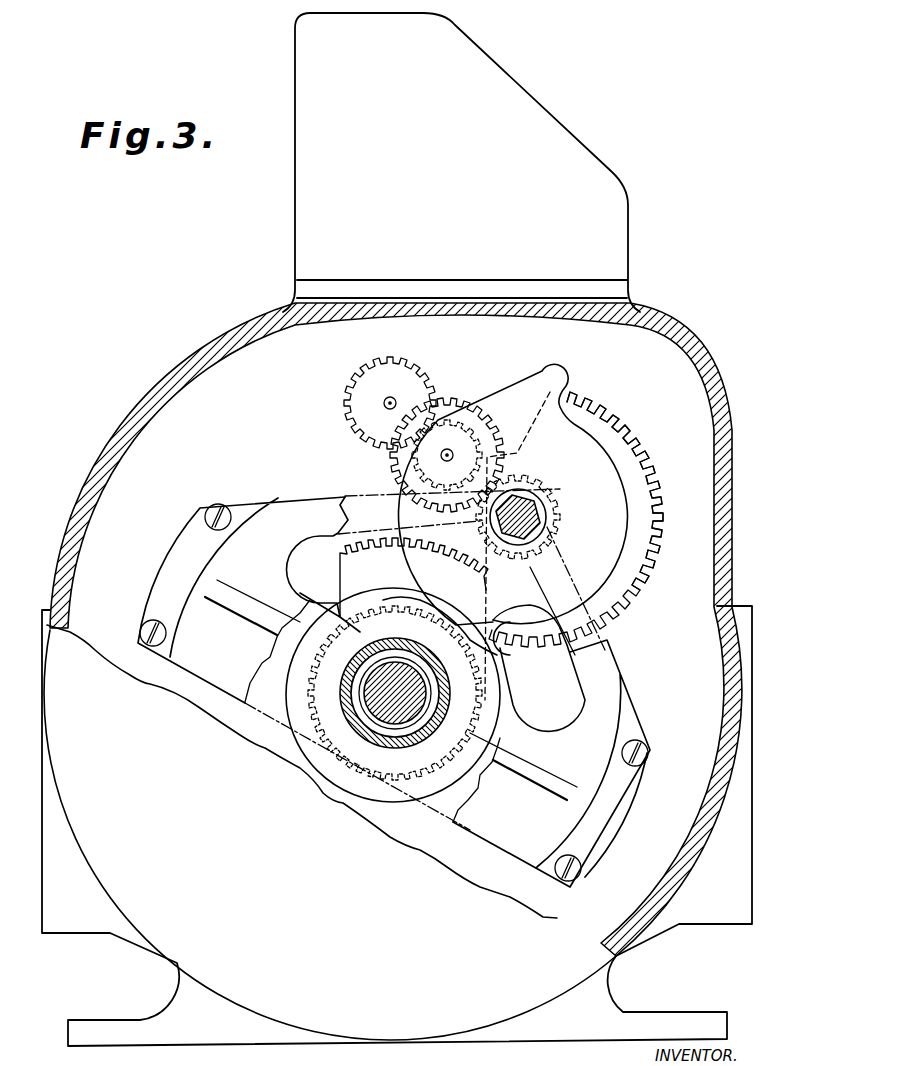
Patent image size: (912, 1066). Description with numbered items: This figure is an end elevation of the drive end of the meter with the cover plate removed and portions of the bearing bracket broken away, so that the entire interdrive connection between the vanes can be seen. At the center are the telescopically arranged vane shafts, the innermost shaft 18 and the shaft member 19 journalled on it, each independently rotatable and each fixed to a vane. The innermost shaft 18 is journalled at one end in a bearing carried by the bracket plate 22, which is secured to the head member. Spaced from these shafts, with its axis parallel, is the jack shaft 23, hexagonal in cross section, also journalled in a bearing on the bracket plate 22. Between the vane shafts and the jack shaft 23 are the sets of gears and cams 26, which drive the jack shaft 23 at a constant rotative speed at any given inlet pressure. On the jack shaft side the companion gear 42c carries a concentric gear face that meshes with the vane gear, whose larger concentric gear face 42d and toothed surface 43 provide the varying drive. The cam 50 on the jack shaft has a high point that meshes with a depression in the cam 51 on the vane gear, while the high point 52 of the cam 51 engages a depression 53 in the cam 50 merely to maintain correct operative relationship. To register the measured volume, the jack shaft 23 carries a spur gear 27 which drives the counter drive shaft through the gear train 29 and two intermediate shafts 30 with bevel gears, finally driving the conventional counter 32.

The counter 32 is at (527, 88).
The bracket plate 22 is at (233, 678).
The cam 50 is at (588, 462).
The sets of gears and cams 26 is at (633, 590).
The companion gear 42c is at (703, 483).
The gear train 29 is at (450, 405).
The intermediate shafts 30 is at (393, 394).
The jack shaft 23 is at (533, 507).
The spur gear 27 is at (560, 512).
The depression 53 is at (535, 615).
The high point 52 is at (498, 655).
The concentric gear face 42d is at (392, 529).
The cam 51 is at (298, 738).
The toothed surface 43 is at (423, 773).
The innermost shaft 18 is at (398, 673).
The shaft member 19 is at (403, 737).